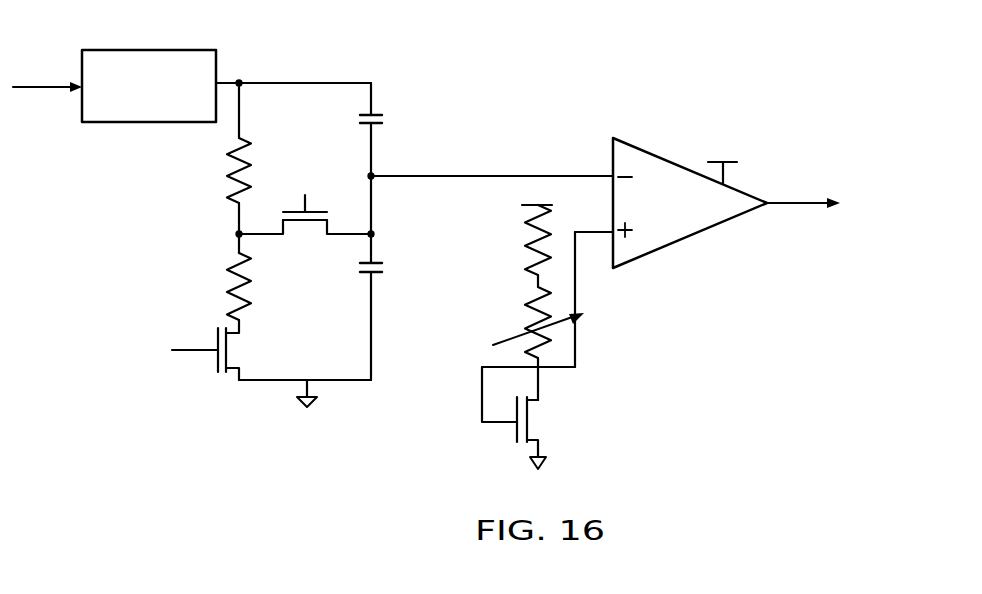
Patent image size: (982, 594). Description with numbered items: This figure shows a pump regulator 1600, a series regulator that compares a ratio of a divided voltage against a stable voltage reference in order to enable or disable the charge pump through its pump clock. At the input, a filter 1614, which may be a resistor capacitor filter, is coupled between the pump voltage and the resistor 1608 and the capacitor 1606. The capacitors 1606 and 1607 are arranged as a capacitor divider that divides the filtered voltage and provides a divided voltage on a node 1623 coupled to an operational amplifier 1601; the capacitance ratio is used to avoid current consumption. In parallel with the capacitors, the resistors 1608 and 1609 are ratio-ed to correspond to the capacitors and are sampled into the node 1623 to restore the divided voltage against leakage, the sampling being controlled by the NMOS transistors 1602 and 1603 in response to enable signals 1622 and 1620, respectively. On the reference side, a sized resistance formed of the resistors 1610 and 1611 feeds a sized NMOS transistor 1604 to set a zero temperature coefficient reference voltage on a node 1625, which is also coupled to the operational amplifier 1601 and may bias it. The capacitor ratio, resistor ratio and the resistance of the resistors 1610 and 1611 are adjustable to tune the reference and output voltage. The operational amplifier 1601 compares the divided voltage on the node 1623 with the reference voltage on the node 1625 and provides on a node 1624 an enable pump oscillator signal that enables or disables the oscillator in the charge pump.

The pump regulator 1600 is at (722, 60).
The filter 1614 is at (178, 80).
The resistor 1608 is at (230, 183).
The resistor 1609 is at (227, 298).
The NMOS transistor 1602 is at (305, 226).
The enable signal 1622 is at (312, 198).
The NMOS transistor 1603 is at (232, 348).
The enable signal 1620 is at (197, 351).
The capacitor 1606 is at (372, 155).
The capacitor 1607 is at (376, 266).
The node 1623 is at (508, 176).
The resistor 1610 is at (530, 237).
The resistor 1611 is at (532, 305).
The node 1625 is at (577, 338).
The NMOS transistor 1604 is at (535, 417).
The operational amplifier 1601 is at (697, 203).
The node 1624 is at (790, 203).